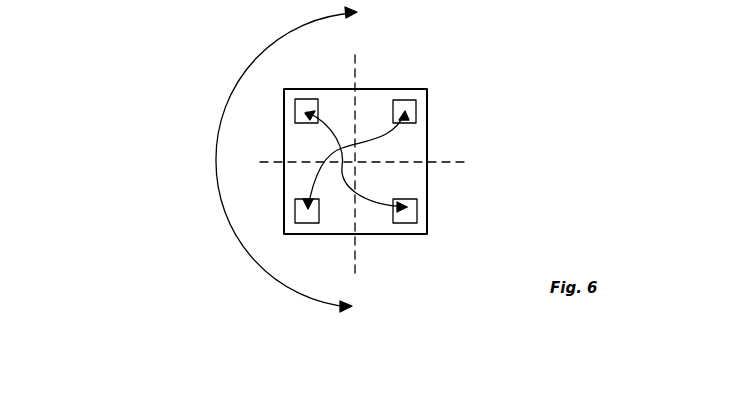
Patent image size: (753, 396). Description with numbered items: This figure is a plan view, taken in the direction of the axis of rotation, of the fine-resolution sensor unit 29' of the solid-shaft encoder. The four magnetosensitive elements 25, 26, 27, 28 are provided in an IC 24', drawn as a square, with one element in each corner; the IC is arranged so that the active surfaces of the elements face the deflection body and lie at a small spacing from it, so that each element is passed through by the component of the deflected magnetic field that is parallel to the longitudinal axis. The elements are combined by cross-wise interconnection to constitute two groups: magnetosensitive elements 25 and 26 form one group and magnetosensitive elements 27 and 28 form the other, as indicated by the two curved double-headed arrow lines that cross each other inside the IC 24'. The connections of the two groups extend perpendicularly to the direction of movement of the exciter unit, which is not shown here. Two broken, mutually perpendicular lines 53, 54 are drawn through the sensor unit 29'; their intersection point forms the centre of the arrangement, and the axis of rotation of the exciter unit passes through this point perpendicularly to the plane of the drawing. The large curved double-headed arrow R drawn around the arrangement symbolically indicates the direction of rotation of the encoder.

The IC 24' is at (398, 161).
The magnetosensitive element 25 is at (308, 110).
The magnetosensitive element 26 is at (405, 212).
The magnetosensitive element 27 is at (308, 215).
The magnetosensitive element 28 is at (402, 110).
The fine-resolution sensor unit 29' is at (180, 96).
The broken line 53 is at (438, 162).
The broken line 54 is at (355, 255).
The double-headed arrow R is at (220, 206).